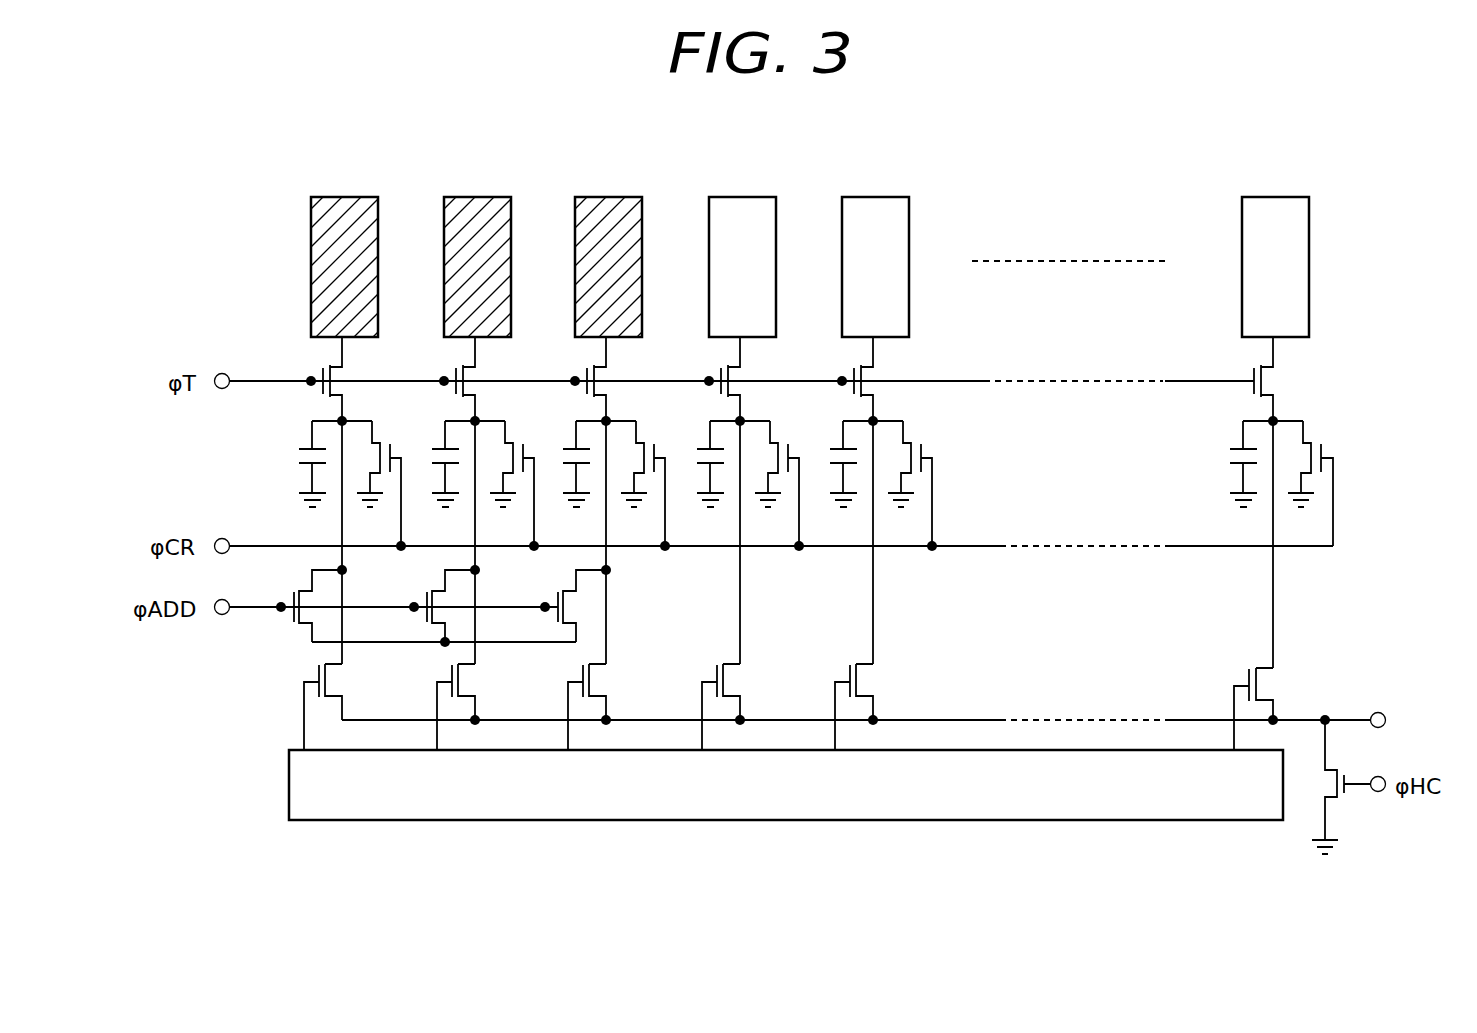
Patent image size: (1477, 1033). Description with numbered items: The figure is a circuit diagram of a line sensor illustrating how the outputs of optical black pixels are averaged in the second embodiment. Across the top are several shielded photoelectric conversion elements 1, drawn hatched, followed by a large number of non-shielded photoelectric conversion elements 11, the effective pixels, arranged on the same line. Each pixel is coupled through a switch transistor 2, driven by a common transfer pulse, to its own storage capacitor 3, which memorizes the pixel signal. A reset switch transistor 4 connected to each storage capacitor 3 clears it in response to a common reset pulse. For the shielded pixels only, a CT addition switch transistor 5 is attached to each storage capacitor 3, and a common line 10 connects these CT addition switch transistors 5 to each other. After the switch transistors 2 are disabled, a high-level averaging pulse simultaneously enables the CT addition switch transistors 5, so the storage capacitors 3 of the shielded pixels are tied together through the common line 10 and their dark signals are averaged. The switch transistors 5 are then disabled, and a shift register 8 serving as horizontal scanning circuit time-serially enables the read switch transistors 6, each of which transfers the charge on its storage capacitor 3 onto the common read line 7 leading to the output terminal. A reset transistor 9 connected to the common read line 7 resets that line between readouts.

The shielded photoelectric conversion element 1 is at (352, 197).
The switch transistor 2 is at (318, 366).
The storage capacitor 3 is at (300, 458).
The reset switch transistor 4 is at (389, 446).
The CT addition switch transistor 5 is at (296, 589).
The read switch transistor 6 is at (338, 677).
The common read line 7 is at (1301, 716).
The shift register 8 is at (393, 821).
The reset transistor 9 is at (1336, 805).
The common line 10 is at (519, 645).
The non-shielded photoelectric conversion element 11 is at (744, 197).